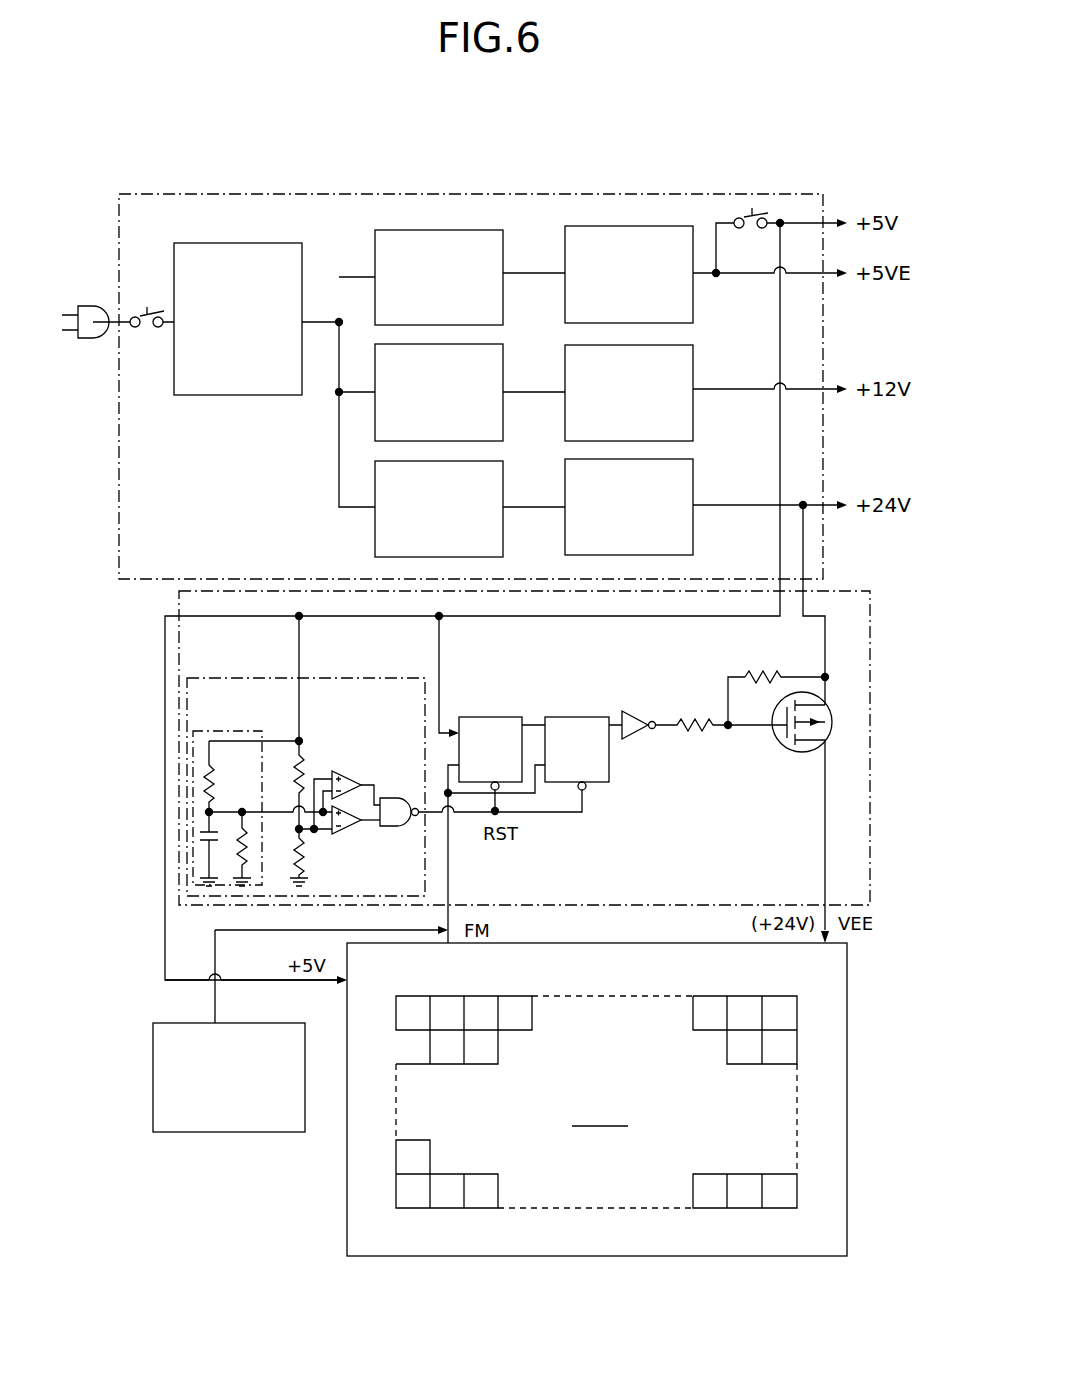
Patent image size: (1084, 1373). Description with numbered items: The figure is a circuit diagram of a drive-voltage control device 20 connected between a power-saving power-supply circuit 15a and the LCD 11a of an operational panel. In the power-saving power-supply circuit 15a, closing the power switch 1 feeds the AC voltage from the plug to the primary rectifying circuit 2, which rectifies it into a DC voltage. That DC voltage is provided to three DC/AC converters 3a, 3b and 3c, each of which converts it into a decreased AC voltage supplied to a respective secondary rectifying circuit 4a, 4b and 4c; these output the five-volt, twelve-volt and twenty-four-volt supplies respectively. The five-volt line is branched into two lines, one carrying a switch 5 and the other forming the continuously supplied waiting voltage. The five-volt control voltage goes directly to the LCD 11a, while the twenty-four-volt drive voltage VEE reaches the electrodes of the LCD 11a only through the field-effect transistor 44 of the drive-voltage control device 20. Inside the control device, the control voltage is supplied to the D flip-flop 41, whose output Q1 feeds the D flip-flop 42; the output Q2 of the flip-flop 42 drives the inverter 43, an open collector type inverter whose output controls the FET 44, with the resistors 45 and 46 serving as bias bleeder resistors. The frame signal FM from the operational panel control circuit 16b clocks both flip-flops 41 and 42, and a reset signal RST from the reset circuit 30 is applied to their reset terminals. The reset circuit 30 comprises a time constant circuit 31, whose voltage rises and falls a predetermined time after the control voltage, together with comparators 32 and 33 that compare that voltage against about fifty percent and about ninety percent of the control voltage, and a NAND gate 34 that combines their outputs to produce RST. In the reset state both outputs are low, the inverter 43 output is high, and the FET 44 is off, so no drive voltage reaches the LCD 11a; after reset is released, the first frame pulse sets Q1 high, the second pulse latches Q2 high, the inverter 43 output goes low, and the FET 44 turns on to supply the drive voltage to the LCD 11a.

The power-saving power-supply circuit 15a is at (119, 228).
The power switch 1 is at (147, 344).
The primary rectifying circuit 2 is at (234, 398).
The DC/AC converter 3a is at (503, 313).
The DC/AC converter 3b is at (503, 430).
The DC/AC converter 3c is at (503, 540).
The secondary rectifying circuit 4a is at (693, 310).
The secondary rectifying circuit 4b is at (693, 430).
The secondary rectifying circuit 4c is at (693, 544).
The switch 5 is at (720, 220).
The drive-voltage control device 20 is at (179, 602).
The reset circuit 30 is at (226, 678).
The time constant circuit 31 is at (227, 808).
The comparator 32 is at (345, 773).
The comparator 33 is at (343, 837).
The NAND gate 34 is at (392, 798).
The D flip-flop 41 is at (488, 717).
The D flip-flop 42 is at (576, 717).
The inverter 43 is at (634, 713).
The field-effect transistor 44 is at (822, 744).
The resistor 45 is at (690, 716).
The resistor 46 is at (760, 675).
The operational panel control circuit 16b is at (168, 1023).
The LCD 11a is at (347, 1216).